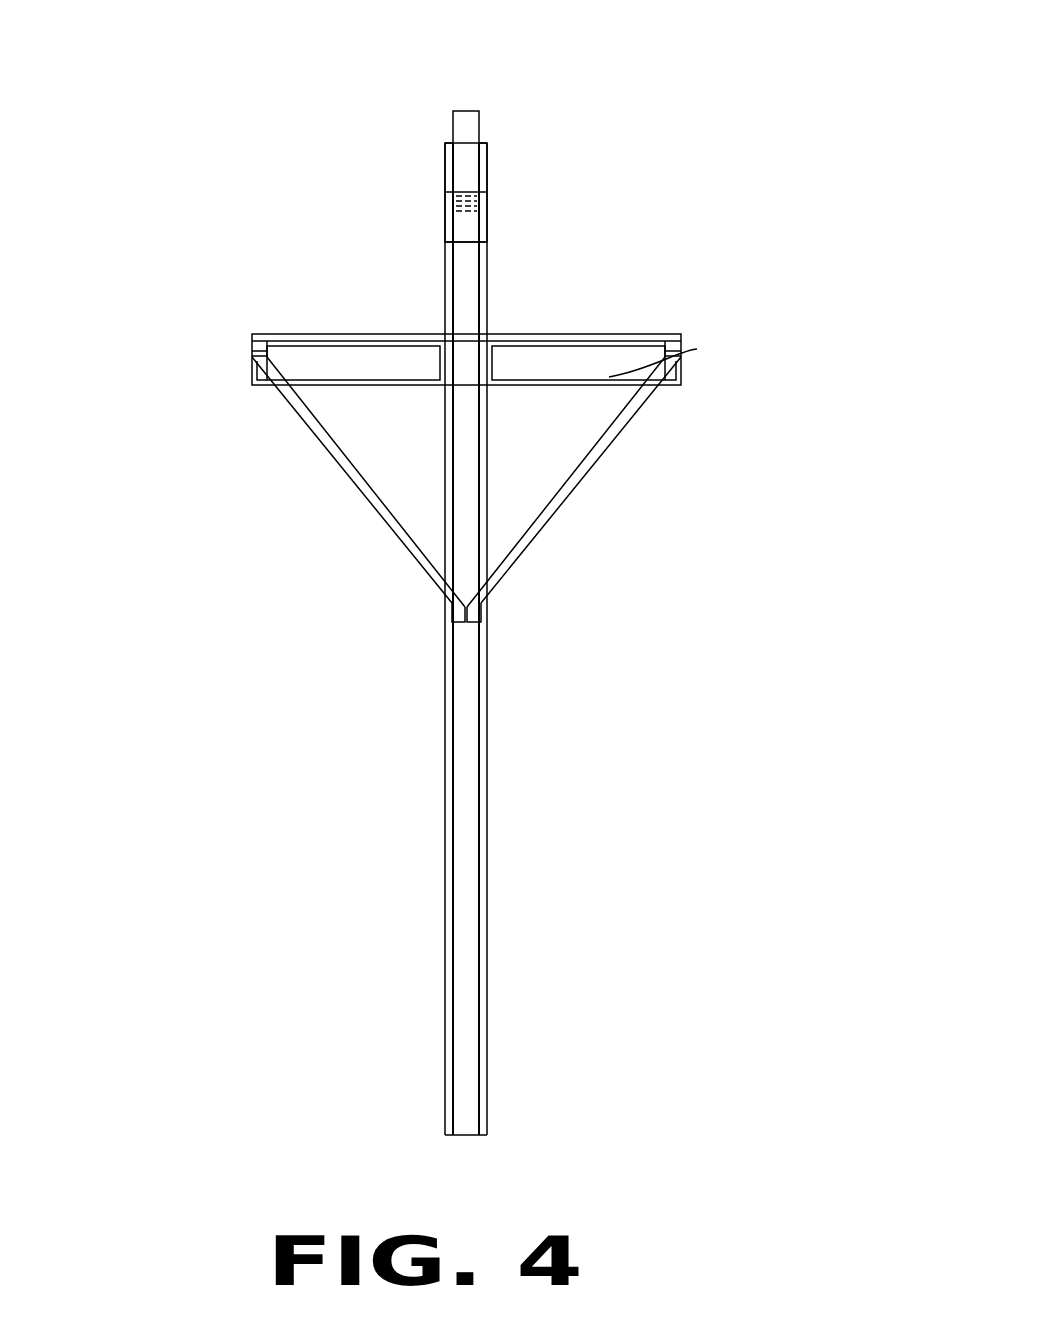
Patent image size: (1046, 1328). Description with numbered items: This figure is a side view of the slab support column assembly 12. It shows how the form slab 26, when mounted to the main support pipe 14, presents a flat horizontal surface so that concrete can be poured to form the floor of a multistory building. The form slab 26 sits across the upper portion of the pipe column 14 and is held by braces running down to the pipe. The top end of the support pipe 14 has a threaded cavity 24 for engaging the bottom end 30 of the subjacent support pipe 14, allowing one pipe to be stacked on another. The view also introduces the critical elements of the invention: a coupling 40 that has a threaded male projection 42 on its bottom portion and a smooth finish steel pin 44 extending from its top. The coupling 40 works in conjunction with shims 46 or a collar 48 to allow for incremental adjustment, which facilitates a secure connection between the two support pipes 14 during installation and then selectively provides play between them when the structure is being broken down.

The slab support column assembly 12 is at (748, 144).
The main support pipe 14 is at (471, 881).
The threaded cavity 24 is at (467, 217).
The form slab 26 is at (338, 330).
The bottom end 30 is at (465, 1134).
The coupling 40 is at (447, 165).
The threaded male projection 42 is at (455, 207).
The smooth finish steel pin 44 is at (457, 121).
The shims 46 is at (430, 162).
The collar 48 is at (486, 210).